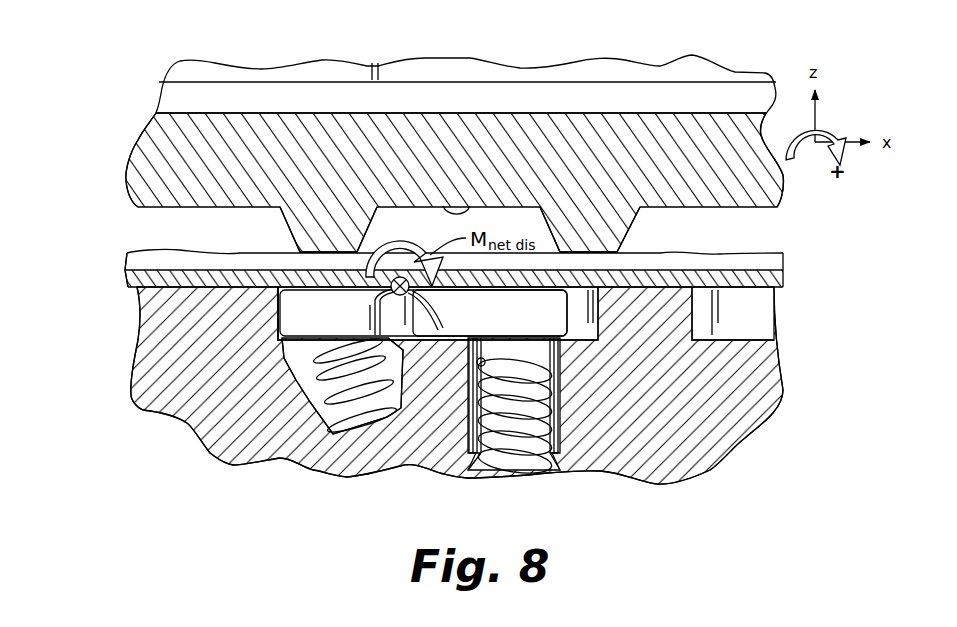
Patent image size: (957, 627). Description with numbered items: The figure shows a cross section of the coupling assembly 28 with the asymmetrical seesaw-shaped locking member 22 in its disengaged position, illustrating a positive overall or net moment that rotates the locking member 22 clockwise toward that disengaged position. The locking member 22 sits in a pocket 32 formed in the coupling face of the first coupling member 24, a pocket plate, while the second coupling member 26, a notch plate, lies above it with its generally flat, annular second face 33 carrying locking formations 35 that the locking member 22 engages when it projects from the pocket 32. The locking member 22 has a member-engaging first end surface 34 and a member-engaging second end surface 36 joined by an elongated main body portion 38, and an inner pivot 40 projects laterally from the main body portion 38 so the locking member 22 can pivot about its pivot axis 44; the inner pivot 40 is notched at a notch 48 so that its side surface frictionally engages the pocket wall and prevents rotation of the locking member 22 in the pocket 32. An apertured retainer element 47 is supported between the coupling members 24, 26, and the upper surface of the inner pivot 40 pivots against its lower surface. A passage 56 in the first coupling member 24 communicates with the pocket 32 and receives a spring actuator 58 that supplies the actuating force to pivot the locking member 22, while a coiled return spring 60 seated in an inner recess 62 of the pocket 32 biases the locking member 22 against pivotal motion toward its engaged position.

The locking member 22 is at (282, 345).
The first coupling member 24 is at (720, 423).
The second coupling member 26 is at (672, 120).
The coupling assembly 28 is at (548, 48).
The pocket 32 is at (262, 298).
The second face 33 is at (443, 206).
The first end surface 34 is at (280, 312).
The locking formations 35 is at (338, 236).
The second end surface 36 is at (569, 314).
The main body portion 38 is at (538, 321).
The inner pivot 40 is at (390, 318).
The pivot axis 44 is at (392, 291).
The retainer element 47 is at (125, 283).
The notch 48 is at (408, 296).
The passage 56 is at (548, 463).
The spring actuator 58 is at (470, 455).
The coiled return spring 60 is at (378, 418).
The inner recess 62 is at (293, 458).